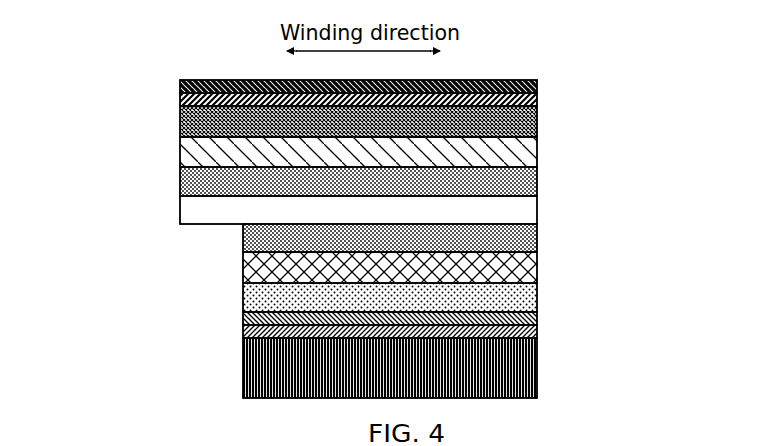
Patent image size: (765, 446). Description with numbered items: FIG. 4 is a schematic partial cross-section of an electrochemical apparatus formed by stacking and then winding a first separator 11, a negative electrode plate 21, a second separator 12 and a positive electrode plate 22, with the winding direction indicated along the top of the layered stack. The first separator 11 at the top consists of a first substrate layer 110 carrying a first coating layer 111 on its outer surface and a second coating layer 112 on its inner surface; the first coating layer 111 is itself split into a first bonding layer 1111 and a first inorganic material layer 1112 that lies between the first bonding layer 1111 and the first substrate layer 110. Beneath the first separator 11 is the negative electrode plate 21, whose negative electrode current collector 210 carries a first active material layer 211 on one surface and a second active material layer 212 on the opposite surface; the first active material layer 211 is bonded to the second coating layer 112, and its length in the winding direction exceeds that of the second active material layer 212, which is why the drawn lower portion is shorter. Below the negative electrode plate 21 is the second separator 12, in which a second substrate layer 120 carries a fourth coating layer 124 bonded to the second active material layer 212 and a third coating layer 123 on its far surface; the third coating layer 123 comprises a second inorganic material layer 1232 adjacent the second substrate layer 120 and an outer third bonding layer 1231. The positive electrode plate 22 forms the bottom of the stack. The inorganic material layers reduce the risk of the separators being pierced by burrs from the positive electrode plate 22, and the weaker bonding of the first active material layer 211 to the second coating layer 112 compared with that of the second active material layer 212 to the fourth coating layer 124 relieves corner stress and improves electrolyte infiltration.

The first separator 11 is at (388, 114).
The first coating layer 111 is at (360, 92).
The first bonding layer 1111 is at (181, 88).
The first inorganic material layer 1112 is at (181, 99).
The first substrate layer 110 is at (522, 126).
The second coating layer 112 is at (523, 158).
The negative electrode plate 21 is at (425, 208).
The first active material layer 211 is at (525, 186).
The negative electrode current collector 210 is at (522, 210).
The second active material layer 212 is at (523, 244).
The second separator 12 is at (421, 303).
The fourth coating layer 124 is at (525, 272).
The second substrate layer 120 is at (525, 296).
The third coating layer 123 is at (392, 325).
The second inorganic material layer 1232 is at (243, 318).
The third bonding layer 1231 is at (243, 331).
The positive electrode plate 22 is at (530, 368).